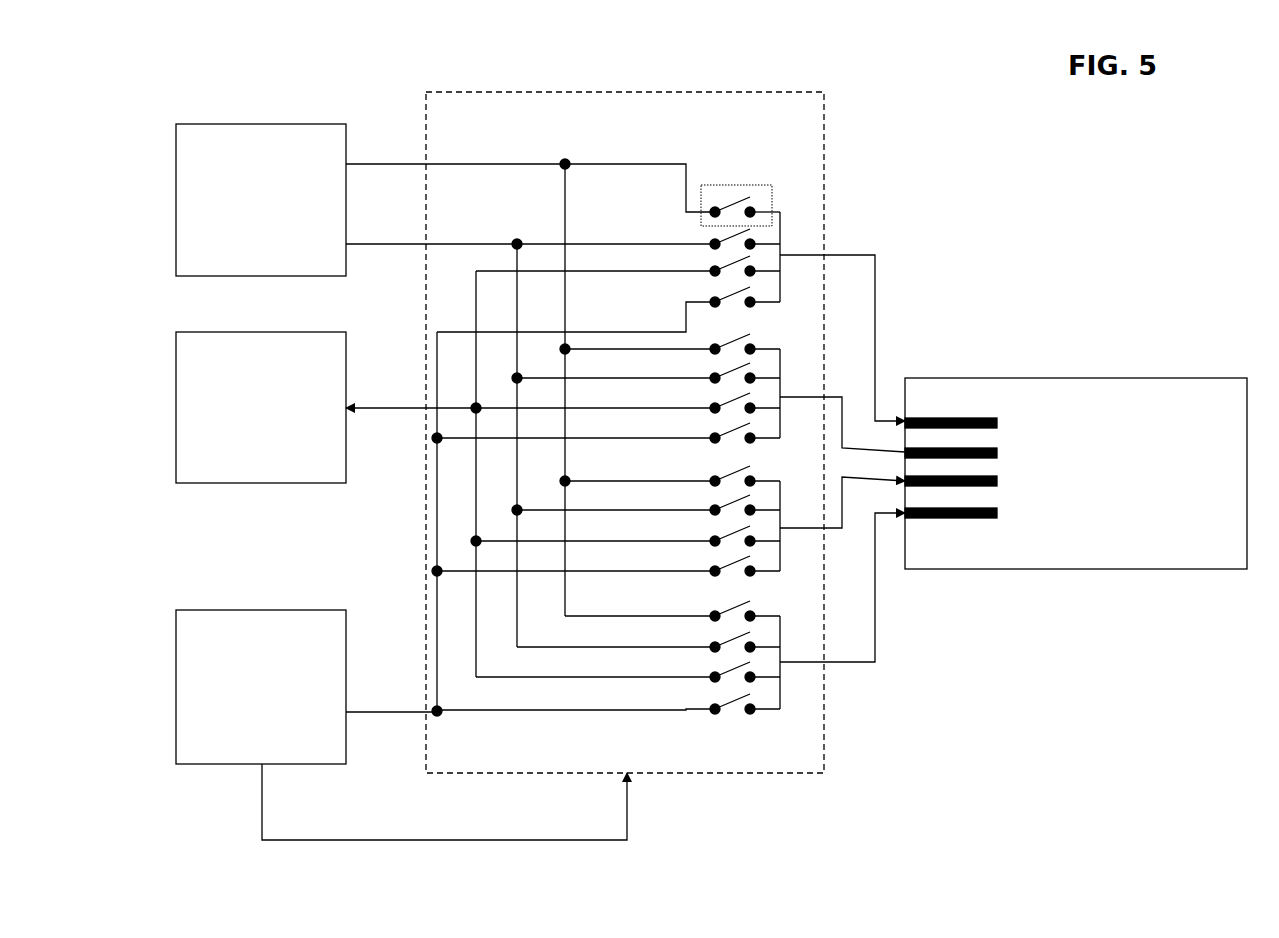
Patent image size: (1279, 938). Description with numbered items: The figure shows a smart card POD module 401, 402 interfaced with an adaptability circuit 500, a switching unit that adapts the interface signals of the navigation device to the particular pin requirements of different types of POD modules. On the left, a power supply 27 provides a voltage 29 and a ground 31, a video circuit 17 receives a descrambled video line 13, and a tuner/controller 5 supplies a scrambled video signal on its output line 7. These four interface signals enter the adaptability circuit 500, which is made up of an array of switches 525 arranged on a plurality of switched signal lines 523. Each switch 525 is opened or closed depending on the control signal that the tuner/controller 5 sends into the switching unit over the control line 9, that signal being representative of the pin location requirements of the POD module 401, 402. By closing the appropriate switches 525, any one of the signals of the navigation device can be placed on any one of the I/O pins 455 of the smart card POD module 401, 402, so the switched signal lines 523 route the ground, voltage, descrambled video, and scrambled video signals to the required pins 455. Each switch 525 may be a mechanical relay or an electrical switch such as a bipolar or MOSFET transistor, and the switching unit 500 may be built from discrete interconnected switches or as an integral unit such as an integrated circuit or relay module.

The tuner/controller 5 is at (294, 562).
The control line 7 is at (422, 730).
The control line 9 is at (422, 850).
The descrambled video line 13 is at (420, 424).
The video circuit 17 is at (292, 287).
The power supply 27 is at (305, 70).
The voltage 29 is at (421, 168).
The ground 31 is at (415, 263).
The adaptability circuit 500 is at (818, 43).
The switched signal lines 523 is at (810, 410).
The switches 525 is at (815, 106).
The smart card POD module 401 is at (1076, 422).
The smart card POD module 402 is at (1076, 473).
The I/O pins 455 is at (1006, 382).